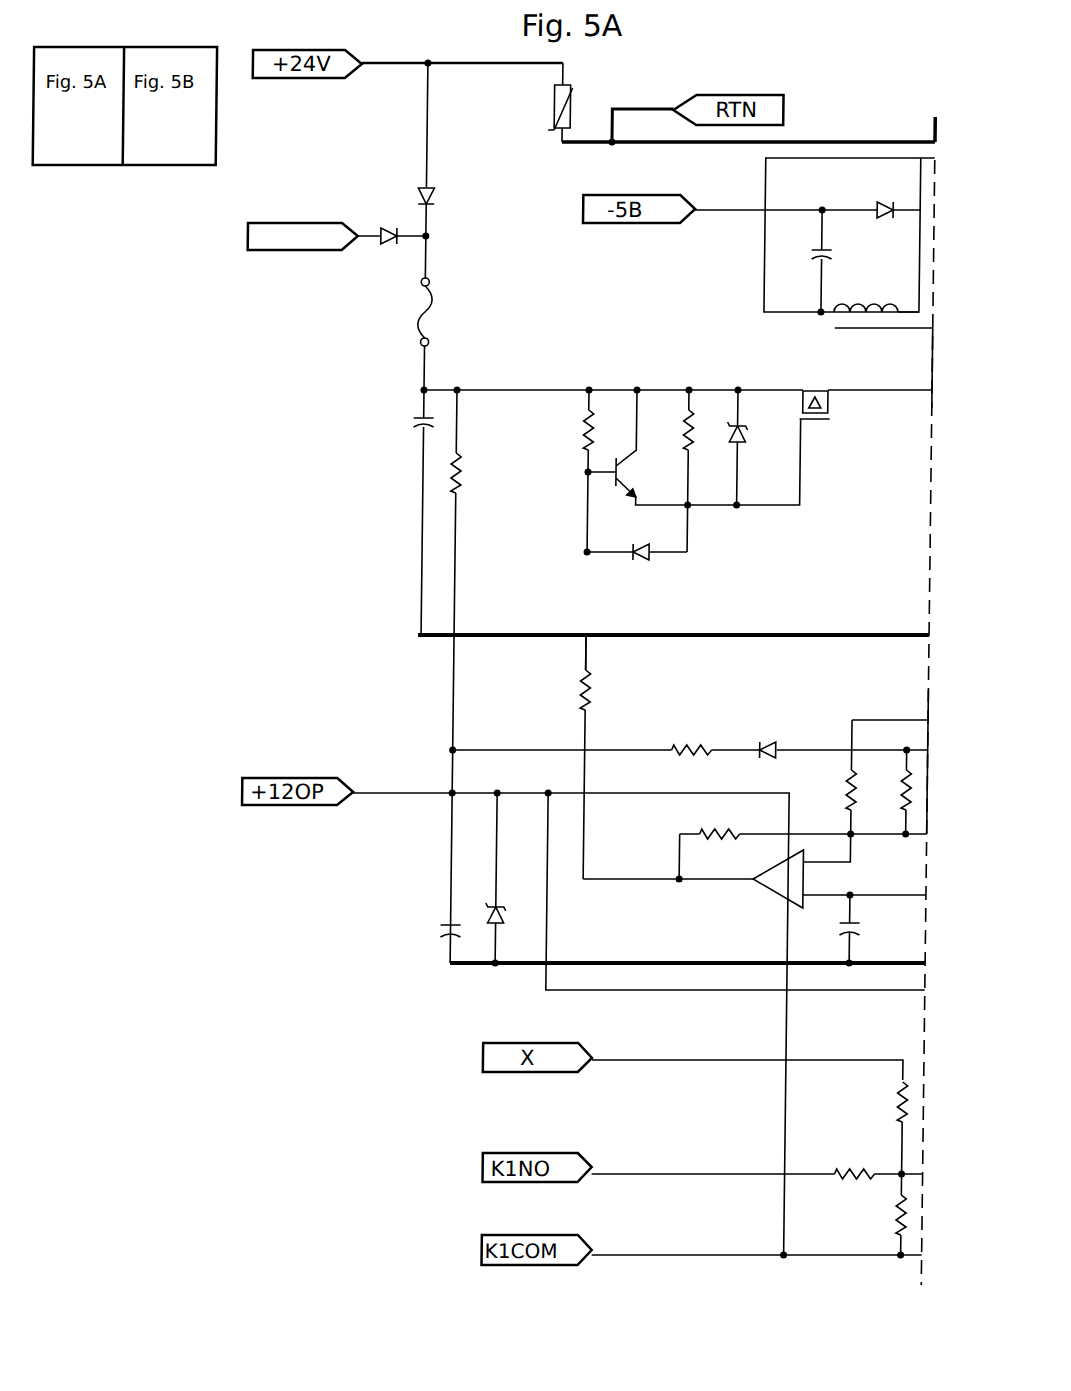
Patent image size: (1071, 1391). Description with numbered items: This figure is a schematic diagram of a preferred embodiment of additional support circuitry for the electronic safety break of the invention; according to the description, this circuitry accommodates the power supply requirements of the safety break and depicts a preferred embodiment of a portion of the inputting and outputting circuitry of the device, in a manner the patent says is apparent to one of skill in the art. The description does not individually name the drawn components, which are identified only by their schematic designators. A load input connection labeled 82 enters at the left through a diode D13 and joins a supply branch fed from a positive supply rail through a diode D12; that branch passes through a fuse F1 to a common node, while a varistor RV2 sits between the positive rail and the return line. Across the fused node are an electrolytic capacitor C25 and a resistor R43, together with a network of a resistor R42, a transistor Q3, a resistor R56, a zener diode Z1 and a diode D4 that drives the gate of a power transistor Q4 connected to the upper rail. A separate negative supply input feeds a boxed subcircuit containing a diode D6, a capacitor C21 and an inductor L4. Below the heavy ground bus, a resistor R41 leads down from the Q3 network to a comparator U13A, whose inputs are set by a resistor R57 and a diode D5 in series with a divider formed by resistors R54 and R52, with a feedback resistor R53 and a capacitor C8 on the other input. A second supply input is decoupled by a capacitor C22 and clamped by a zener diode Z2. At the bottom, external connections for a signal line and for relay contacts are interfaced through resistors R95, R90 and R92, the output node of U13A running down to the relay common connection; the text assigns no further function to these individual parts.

The load terminal 82 is at (303, 223).
The varistor RV2 is at (541, 102).
The diode D12 is at (463, 207).
The diode D13 is at (385, 262).
The fuse F1 is at (447, 313).
The diode D6 is at (850, 192).
The capacitor C21 is at (861, 261).
The inductor L4 is at (876, 303).
The MOSFET transistor Q4 is at (815, 388).
The capacitor C25 is at (387, 512).
The resistor R43 is at (479, 512).
The resistor R42 is at (571, 431).
The transistor Q3 is at (638, 462).
The resistor R56 is at (669, 471).
The zener diode Z1 is at (759, 447).
The diode D4 is at (636, 583).
The resistor R41 is at (604, 757).
The resistor R57 is at (692, 729).
The diode D5 is at (779, 730).
The resistor R54 is at (824, 777).
The resistor R52 is at (890, 792).
The resistor R53 is at (716, 834).
The comparator U13A is at (754, 885).
The capacitor C8 is at (822, 932).
The capacitor C22 is at (411, 938).
The zener diode Z2 is at (513, 878).
The resistor R95 is at (877, 1128).
The resistor R90 is at (845, 1155).
The resistor R92 is at (876, 1214).